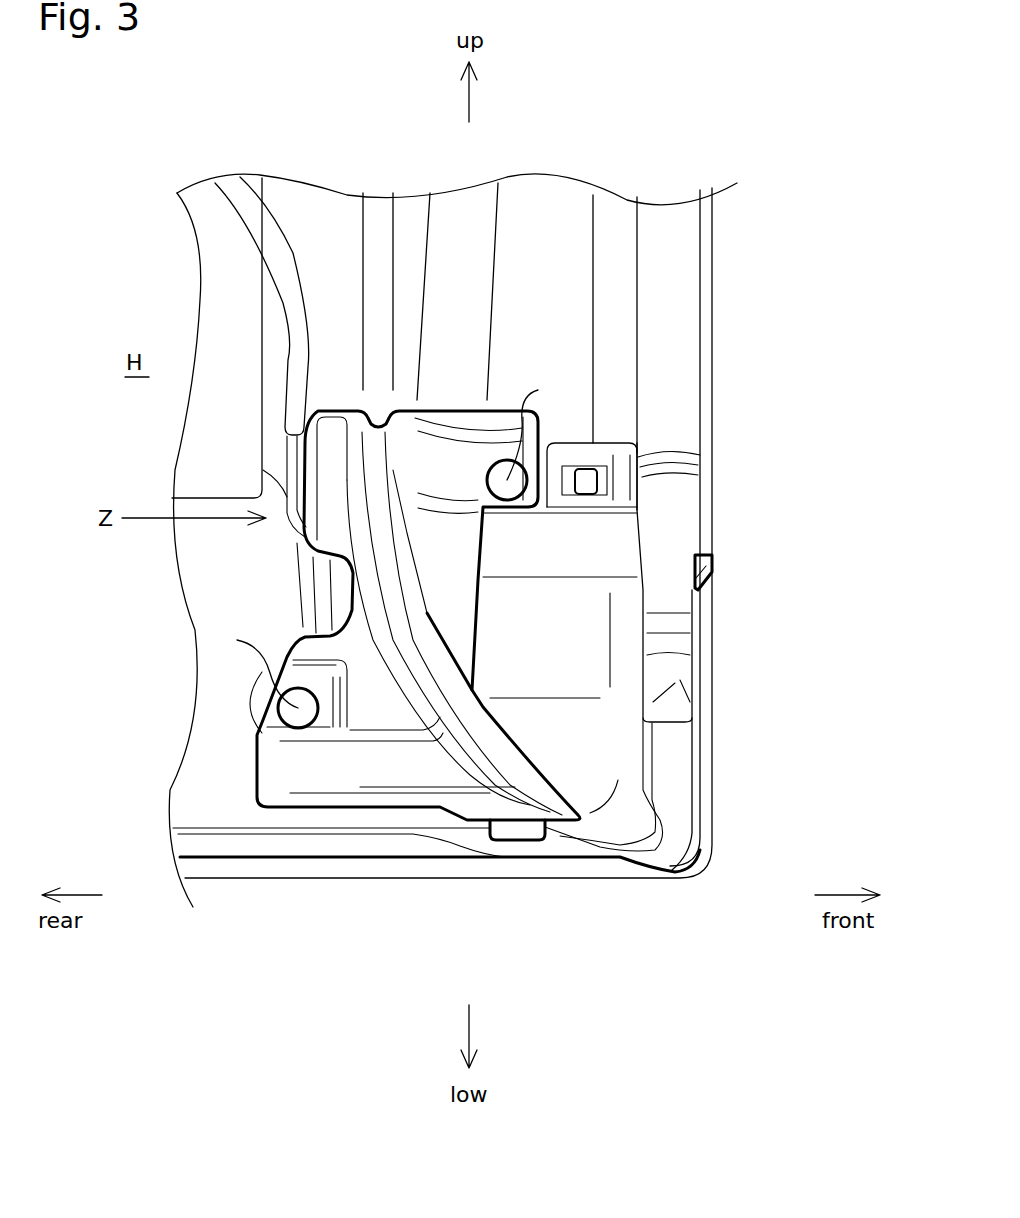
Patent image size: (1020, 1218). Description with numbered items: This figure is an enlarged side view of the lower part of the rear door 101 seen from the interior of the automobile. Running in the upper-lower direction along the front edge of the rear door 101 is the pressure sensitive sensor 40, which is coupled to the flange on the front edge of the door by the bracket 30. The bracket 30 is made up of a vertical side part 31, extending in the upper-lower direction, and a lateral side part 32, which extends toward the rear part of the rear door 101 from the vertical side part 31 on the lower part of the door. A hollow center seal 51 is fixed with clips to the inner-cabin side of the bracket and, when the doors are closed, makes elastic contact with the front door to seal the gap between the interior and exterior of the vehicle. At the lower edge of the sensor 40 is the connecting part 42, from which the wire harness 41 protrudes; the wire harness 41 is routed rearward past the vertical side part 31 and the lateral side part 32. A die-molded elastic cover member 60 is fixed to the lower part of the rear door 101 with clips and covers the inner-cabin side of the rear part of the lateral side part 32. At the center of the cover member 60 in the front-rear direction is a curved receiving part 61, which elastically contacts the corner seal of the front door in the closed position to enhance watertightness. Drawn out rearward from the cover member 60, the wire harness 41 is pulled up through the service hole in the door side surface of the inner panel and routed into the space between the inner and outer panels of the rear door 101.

The bracket 30 is at (712, 680).
The vertical side part 31 is at (695, 605).
The lateral side part 32 is at (570, 560).
The sensor 40 is at (712, 386).
The wire harness 41 is at (258, 238).
The connecting part 42 is at (706, 570).
The center seal 51 is at (683, 255).
The cover member 60 is at (507, 786).
The receiving part 61 is at (523, 737).
The rear door 101 is at (728, 804).